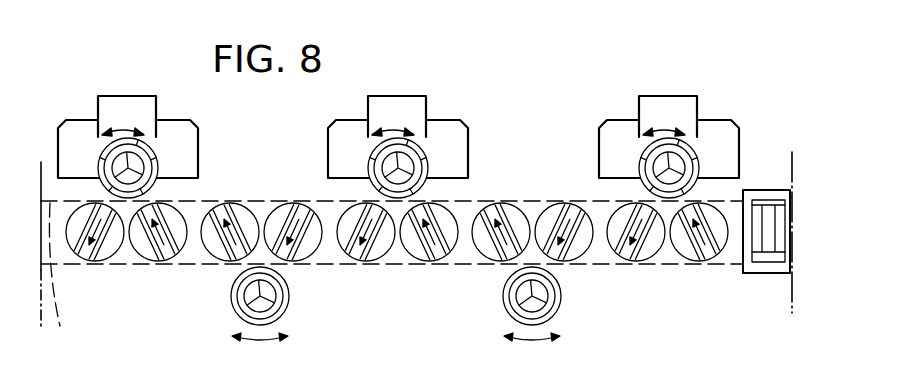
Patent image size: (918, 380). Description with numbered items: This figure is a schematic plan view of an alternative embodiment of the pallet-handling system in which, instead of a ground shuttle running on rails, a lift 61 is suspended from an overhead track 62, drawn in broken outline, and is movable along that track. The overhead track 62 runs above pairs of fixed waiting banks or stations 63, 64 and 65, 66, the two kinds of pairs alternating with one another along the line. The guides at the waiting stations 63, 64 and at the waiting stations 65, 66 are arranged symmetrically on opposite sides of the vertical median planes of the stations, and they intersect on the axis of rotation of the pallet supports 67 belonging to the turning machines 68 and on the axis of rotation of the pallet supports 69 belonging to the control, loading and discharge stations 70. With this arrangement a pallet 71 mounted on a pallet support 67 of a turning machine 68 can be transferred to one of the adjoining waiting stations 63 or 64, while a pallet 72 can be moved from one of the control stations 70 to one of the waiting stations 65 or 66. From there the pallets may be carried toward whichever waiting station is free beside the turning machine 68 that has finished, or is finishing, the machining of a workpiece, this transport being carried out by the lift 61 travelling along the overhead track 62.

The lift 61 is at (770, 268).
The overhead track 62 is at (82, 276).
The fixed waiting bank or station 63 is at (92, 258).
The fixed waiting bank or station 64 is at (155, 253).
The fixed waiting bank or station 65 is at (258, 200).
The fixed waiting bank or station 66 is at (305, 200).
The pallet support 67 is at (98, 154).
The turning machine 68 is at (128, 108).
The pallet support 69 is at (288, 290).
The control, loading and discharge station 70 is at (222, 297).
The pallet 71 is at (132, 157).
The pallet 72 is at (268, 305).